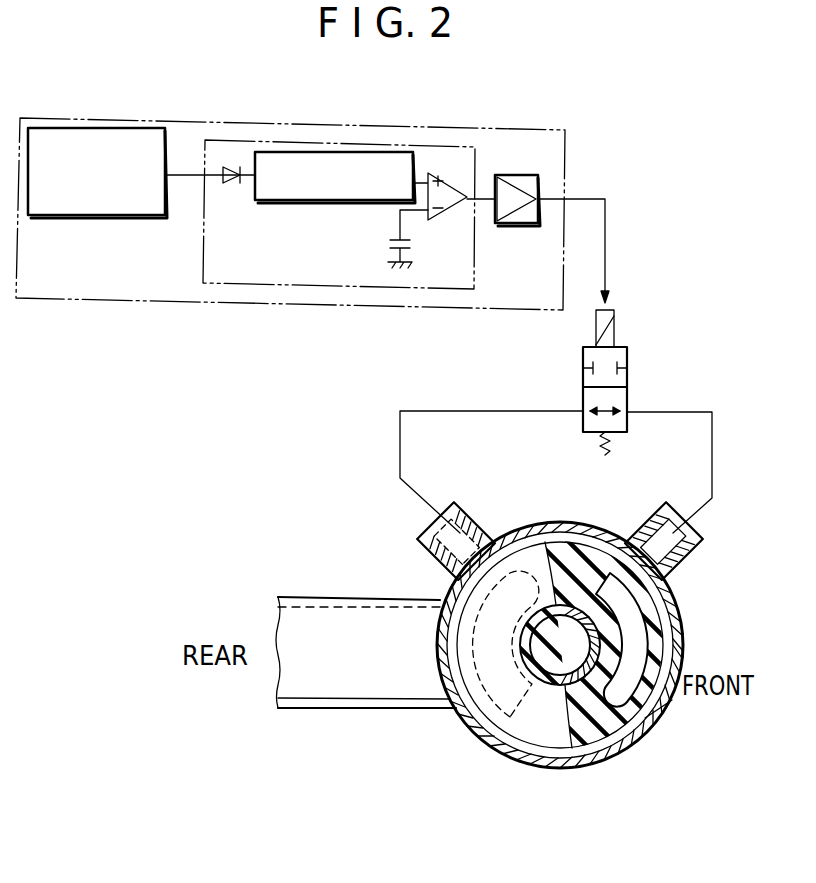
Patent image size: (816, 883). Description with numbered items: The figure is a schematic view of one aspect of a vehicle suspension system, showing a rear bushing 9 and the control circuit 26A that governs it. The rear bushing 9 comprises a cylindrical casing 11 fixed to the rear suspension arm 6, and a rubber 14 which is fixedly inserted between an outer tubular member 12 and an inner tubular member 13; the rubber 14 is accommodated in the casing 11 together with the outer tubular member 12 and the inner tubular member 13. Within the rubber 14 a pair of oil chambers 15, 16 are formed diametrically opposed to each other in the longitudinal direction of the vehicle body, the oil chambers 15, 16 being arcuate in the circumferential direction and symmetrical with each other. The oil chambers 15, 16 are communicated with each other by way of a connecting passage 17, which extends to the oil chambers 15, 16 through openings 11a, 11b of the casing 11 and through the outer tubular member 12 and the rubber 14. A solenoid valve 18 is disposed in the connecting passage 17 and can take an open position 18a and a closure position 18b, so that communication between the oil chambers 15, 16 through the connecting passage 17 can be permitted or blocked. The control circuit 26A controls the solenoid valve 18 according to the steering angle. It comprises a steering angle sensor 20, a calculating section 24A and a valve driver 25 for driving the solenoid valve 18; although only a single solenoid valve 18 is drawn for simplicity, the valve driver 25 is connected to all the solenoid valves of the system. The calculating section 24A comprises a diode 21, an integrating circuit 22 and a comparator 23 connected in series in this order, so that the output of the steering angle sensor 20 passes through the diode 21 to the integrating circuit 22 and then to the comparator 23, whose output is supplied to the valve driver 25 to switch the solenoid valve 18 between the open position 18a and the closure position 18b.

The rear suspension arm 6 is at (358, 708).
The rear bushing 9 is at (596, 521).
The cylindrical casing 11 is at (554, 769).
The opening 11a is at (647, 520).
The opening 11b is at (468, 518).
The outer tubular member 12 is at (557, 521).
The inner tubular member 13 is at (577, 614).
The rubber 14 is at (586, 738).
The oil chamber 15 is at (660, 712).
The oil chamber 16 is at (486, 740).
The connecting passage 17 is at (456, 410).
The solenoid valve 18 is at (614, 382).
The open position 18a is at (622, 400).
The closure position 18b is at (628, 349).
The steering angle sensor 20 is at (114, 128).
The diode 21 is at (228, 183).
The integrating circuit 22 is at (305, 200).
The comparator 23 is at (445, 212).
The calculating section 24A is at (326, 288).
The valve driver 25 is at (524, 223).
The control circuit 26A is at (546, 129).